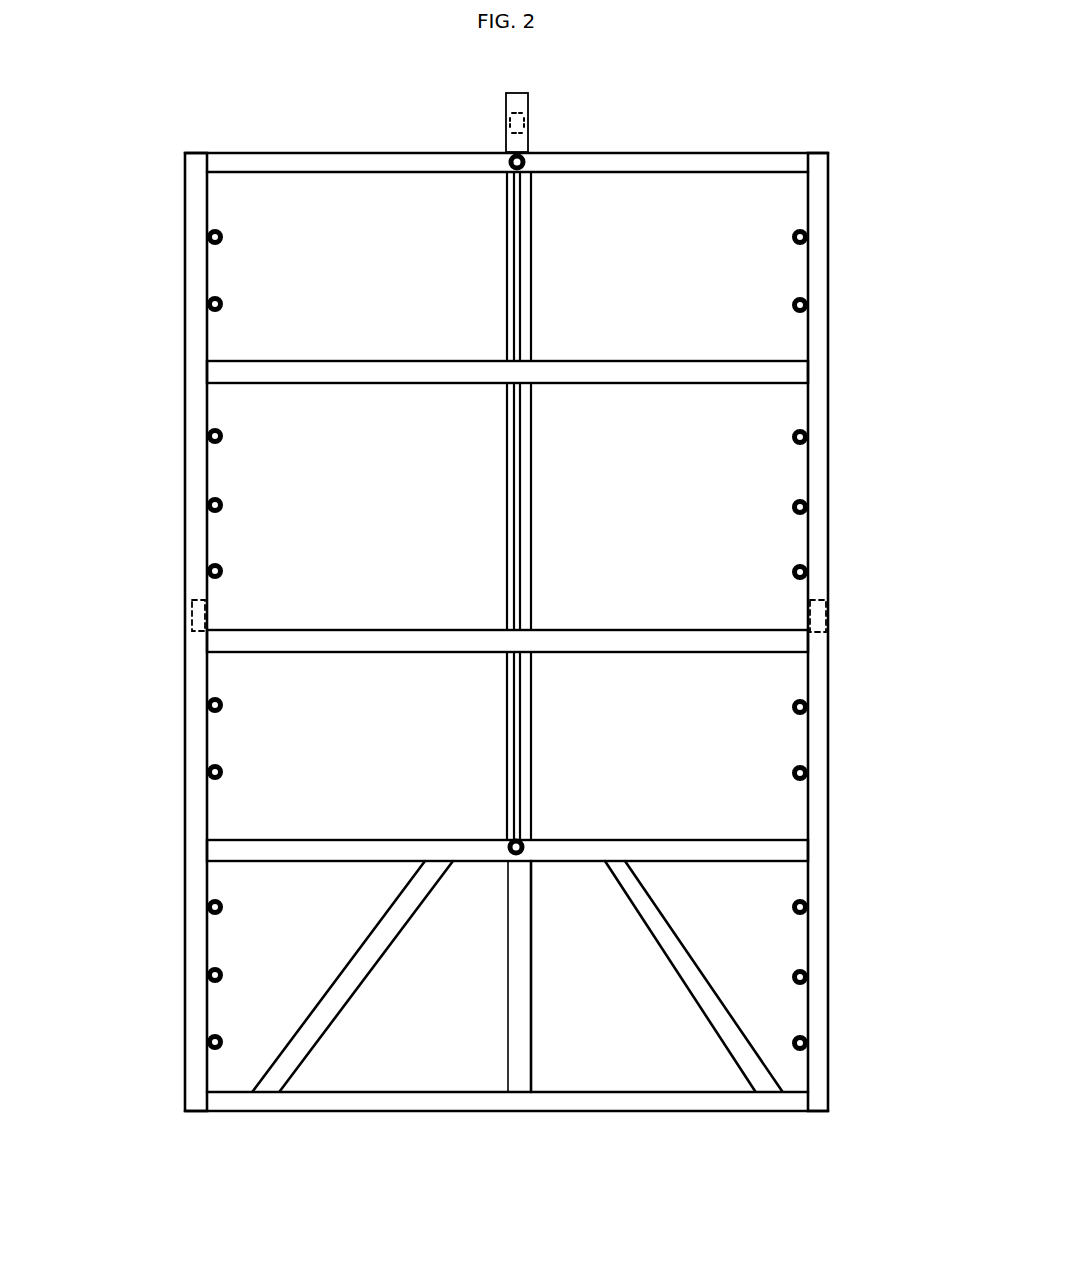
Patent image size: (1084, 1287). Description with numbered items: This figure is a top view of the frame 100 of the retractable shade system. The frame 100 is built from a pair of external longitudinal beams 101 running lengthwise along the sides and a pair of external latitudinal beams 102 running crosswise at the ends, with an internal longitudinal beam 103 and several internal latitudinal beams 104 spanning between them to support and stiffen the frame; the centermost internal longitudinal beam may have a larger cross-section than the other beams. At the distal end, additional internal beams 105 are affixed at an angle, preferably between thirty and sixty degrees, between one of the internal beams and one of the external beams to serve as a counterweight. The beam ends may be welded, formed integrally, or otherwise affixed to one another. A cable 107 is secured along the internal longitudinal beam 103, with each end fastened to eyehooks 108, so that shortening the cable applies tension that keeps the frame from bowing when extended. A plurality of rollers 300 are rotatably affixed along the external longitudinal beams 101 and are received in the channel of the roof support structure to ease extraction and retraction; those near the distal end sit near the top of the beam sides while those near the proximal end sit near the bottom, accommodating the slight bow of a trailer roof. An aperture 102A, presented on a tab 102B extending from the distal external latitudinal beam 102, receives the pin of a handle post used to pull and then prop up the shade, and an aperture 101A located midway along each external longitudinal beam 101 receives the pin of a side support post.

The frame 100 is at (502, 634).
The external longitudinal beam 101 is at (818, 720).
The aperture 101A is at (186, 616).
The external latitudinal beam 102 is at (672, 168).
The aperture 102A is at (529, 122).
The tab 102B is at (508, 95).
The internal longitudinal beam 103 is at (525, 1058).
The internal latitudinal beam 104 is at (340, 375).
The additional internal beam 105 is at (292, 1058).
The cable 107 is at (520, 515).
The eyehook 108 is at (530, 167).
The roller 300 is at (208, 240).